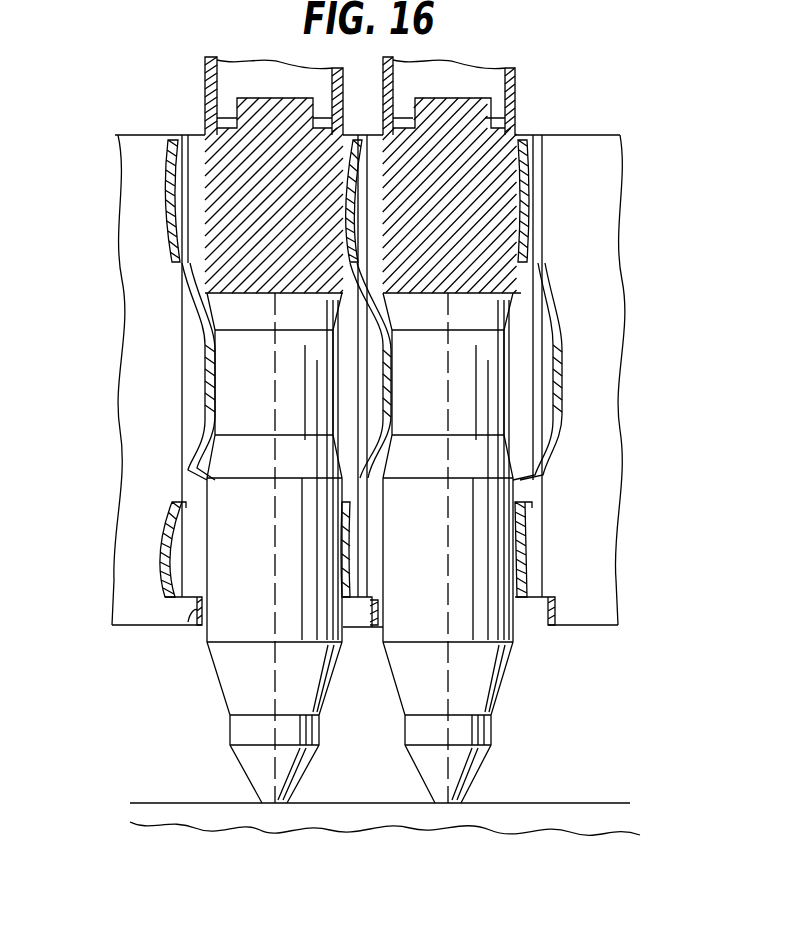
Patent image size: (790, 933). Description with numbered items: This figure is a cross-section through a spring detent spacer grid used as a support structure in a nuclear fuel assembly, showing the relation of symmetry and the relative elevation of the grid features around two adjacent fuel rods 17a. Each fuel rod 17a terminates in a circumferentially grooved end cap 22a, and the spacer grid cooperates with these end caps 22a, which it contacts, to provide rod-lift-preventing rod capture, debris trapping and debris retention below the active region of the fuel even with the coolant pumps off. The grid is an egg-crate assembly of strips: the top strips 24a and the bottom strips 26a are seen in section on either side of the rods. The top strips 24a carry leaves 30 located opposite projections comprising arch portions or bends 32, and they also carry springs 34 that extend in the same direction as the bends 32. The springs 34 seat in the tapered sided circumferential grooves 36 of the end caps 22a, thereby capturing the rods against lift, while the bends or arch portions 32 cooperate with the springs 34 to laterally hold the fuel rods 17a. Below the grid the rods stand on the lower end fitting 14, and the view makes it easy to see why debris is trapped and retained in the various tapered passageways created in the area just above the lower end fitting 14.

The lower end fitting 14 is at (548, 803).
The fuel rods 17a is at (207, 78).
The end caps 22a is at (207, 132).
The top strips 24a is at (537, 435).
The bottom strips 26a is at (137, 218).
The leaves 30 is at (195, 612).
The arch portions or bends 32 is at (167, 170).
The springs 34 is at (205, 387).
The circumferential grooves 36 is at (230, 358).